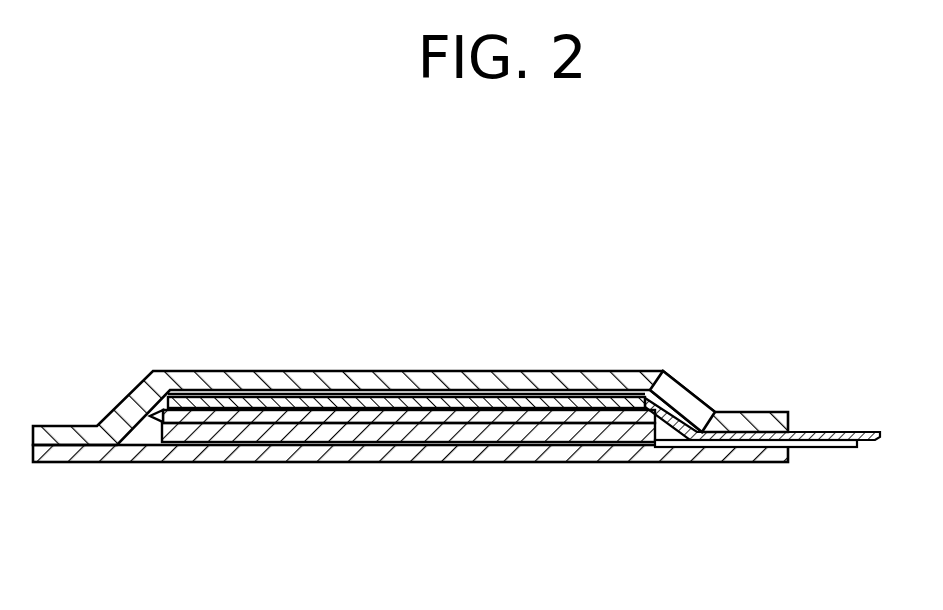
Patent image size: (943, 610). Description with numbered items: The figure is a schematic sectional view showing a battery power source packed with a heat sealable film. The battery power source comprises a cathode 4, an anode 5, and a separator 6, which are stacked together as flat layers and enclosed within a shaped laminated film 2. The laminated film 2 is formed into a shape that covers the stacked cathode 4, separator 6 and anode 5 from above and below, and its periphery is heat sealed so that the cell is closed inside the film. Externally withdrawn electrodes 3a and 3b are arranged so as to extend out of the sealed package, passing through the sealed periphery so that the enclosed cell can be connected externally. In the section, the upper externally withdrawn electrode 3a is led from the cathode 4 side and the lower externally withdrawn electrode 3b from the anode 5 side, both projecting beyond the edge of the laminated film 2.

The shaped laminated film 2 is at (444, 372).
The externally withdrawn electrode 3a is at (828, 428).
The externally withdrawn electrode 3b is at (838, 462).
The cathode 4 is at (293, 395).
The anode 5 is at (278, 426).
The separator 6 is at (480, 416).